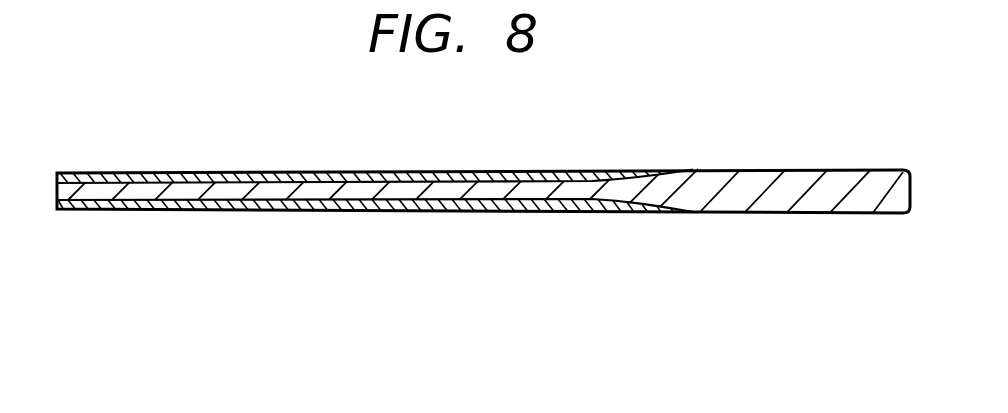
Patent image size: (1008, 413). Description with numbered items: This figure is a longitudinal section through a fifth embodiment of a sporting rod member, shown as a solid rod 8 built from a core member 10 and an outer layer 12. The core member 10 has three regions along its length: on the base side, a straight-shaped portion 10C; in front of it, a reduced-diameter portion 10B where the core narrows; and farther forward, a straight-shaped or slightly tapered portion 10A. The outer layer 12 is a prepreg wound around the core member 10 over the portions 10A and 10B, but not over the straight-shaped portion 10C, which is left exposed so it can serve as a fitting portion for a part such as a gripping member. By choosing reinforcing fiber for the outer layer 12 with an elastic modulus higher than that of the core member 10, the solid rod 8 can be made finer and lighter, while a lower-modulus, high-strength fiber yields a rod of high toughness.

The solid rod 8 is at (483, 217).
The outer layer 12 is at (517, 167).
The core member 10 is at (485, 257).
The straight-shaped or slightly tapered portion 10A is at (475, 197).
The reduced-diameter portion 10B is at (628, 204).
The straight-shaped portion 10C is at (801, 230).